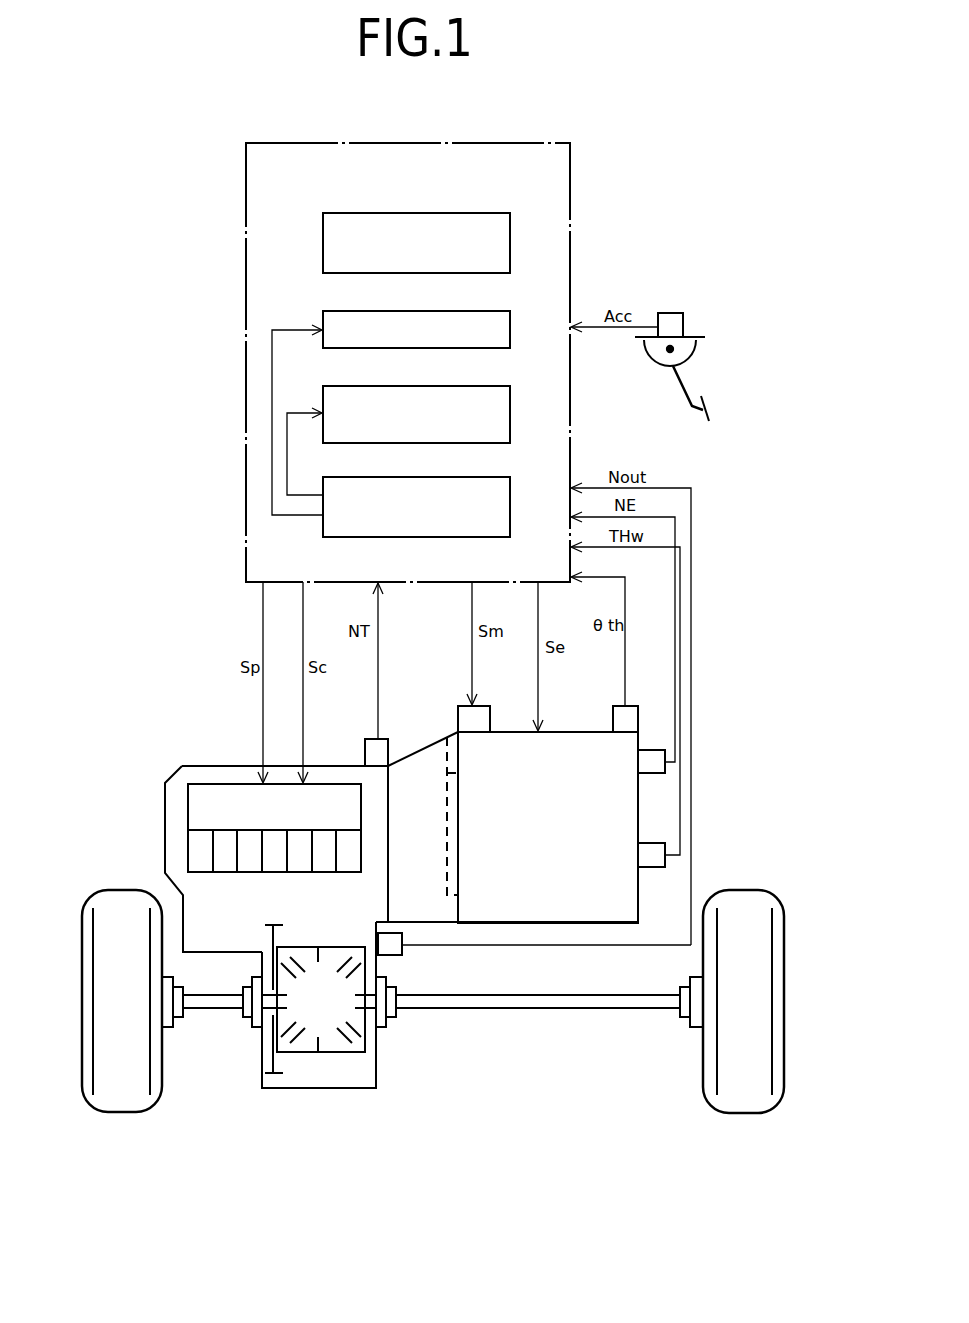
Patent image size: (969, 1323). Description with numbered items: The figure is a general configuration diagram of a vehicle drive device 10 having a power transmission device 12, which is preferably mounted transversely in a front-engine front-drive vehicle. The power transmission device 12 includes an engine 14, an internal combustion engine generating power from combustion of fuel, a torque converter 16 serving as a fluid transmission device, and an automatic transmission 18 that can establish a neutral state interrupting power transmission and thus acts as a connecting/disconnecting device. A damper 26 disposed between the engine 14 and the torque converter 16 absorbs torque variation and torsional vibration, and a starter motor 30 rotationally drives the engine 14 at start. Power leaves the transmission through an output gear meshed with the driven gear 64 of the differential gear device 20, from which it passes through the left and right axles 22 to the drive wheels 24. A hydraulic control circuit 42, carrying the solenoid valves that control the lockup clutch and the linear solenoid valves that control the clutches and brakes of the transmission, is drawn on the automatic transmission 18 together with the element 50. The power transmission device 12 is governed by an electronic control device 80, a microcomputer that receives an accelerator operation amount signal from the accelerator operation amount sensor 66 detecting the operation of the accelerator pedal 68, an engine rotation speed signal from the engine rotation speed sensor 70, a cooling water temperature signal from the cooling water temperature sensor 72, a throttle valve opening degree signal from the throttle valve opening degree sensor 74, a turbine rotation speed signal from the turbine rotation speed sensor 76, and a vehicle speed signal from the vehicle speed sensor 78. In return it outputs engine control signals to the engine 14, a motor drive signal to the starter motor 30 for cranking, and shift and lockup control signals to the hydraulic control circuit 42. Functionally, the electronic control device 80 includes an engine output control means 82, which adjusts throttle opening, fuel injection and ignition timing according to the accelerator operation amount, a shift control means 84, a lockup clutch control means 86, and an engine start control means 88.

The vehicle drive device 10 is at (705, 160).
The power transmission device 12 is at (130, 565).
The engine 14 is at (573, 745).
The torque converter 16 is at (407, 773).
The automatic transmission 18 is at (198, 887).
The differential gear device 20 is at (368, 1066).
The axles 22 is at (203, 1012).
The drive wheels 24 is at (119, 1105).
The damper 26 is at (452, 730).
The starter motor 30 is at (483, 718).
The hydraulic control circuit 42 is at (193, 800).
The hydraulic control circuit 50 is at (212, 764).
The driven gear 64 is at (278, 1078).
The accelerator operation amount sensor 66 is at (668, 322).
The accelerator pedal 68 is at (707, 412).
The engine rotation speed sensor 70 is at (652, 867).
The cooling water temperature sensor 72 is at (652, 773).
The throttle valve opening degree sensor 74 is at (633, 720).
The turbine rotation speed sensor 76 is at (367, 752).
The vehicle speed sensor 78 is at (393, 948).
The electronic control device 80 is at (497, 143).
The engine output control means 82 is at (478, 218).
The shift control means 84 is at (478, 314).
The lockup clutch control means 86 is at (478, 393).
The engine start control means 88 is at (478, 483).